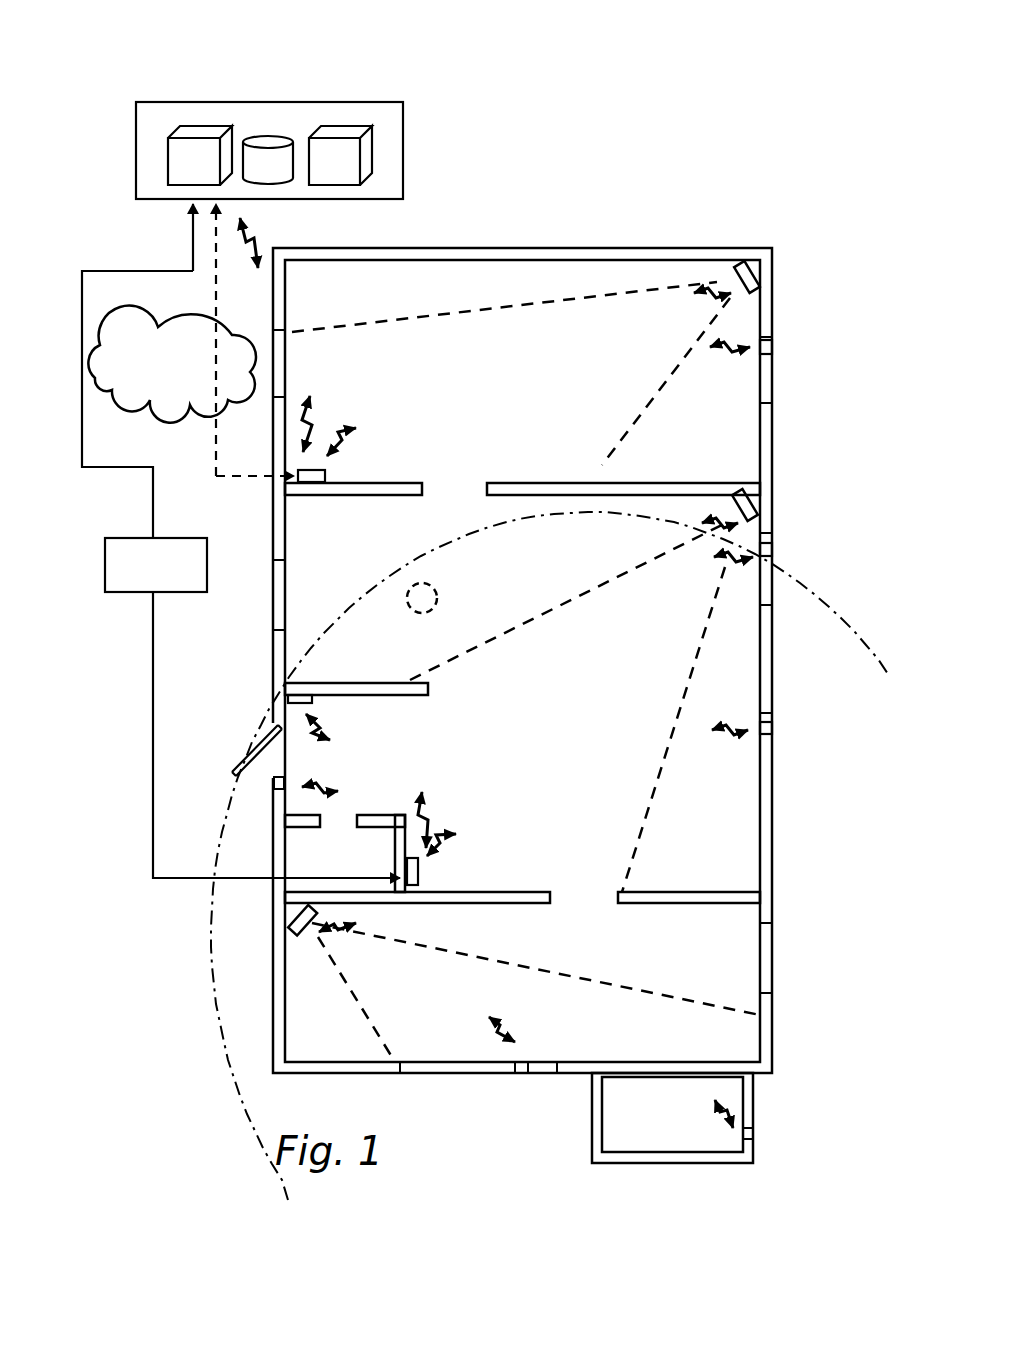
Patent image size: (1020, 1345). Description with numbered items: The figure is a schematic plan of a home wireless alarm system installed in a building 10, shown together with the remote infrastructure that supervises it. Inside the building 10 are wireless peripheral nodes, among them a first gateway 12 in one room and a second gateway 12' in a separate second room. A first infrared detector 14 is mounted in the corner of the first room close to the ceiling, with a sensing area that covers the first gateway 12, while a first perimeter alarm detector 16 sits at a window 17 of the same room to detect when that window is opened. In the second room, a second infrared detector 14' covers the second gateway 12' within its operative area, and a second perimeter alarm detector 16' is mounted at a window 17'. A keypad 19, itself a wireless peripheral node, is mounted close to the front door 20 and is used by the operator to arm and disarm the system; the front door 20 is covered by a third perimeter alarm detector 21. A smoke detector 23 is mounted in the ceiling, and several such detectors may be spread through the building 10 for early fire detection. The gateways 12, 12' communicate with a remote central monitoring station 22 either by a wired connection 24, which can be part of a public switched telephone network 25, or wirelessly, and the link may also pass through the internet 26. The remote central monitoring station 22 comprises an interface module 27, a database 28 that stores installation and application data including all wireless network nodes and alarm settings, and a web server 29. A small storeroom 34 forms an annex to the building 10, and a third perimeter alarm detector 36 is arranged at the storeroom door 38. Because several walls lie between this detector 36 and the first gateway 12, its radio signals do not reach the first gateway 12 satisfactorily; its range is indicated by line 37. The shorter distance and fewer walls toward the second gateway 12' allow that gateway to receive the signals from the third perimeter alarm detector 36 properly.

The building 10 is at (525, 677).
The first gateway 12 is at (355, 455).
The second gateway 12' is at (470, 862).
The first infrared detector 14 is at (787, 260).
The second infrared detector 14' is at (795, 493).
The first perimeter alarm detector 16 is at (806, 325).
The second perimeter alarm detector 16' is at (810, 536).
The window 17 is at (807, 376).
The window 17' is at (814, 599).
The keypad 19 is at (310, 703).
The front door 20 is at (245, 760).
The third perimeter alarm detector 21 is at (272, 785).
The remote central monitoring station 22 is at (273, 108).
The smoke detector 23 is at (412, 590).
The wired connection 24 is at (150, 617).
The public switched telephone network 25 is at (193, 547).
The internet 26 is at (190, 397).
The interface module 27 is at (180, 150).
The database 28 is at (273, 150).
The web server 29 is at (355, 163).
The storeroom 34 is at (672, 1118).
The third perimeter alarm detector 36 is at (754, 1133).
The line indicating range 37 is at (865, 652).
The storeroom door 38 is at (753, 1105).